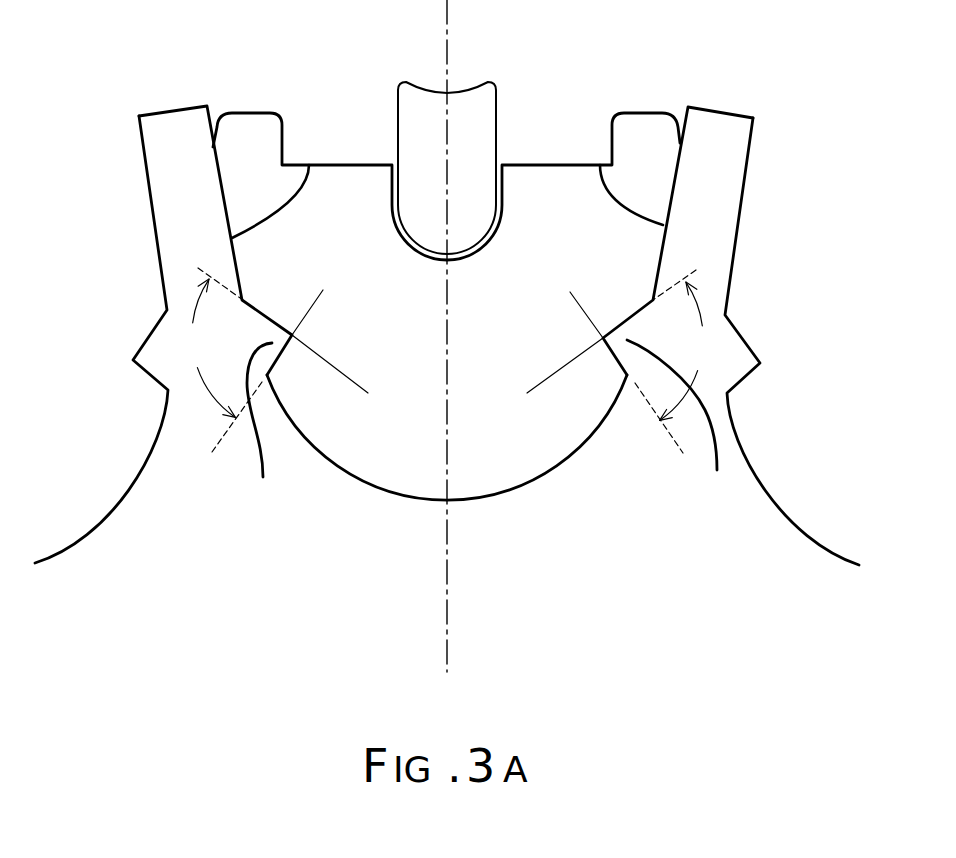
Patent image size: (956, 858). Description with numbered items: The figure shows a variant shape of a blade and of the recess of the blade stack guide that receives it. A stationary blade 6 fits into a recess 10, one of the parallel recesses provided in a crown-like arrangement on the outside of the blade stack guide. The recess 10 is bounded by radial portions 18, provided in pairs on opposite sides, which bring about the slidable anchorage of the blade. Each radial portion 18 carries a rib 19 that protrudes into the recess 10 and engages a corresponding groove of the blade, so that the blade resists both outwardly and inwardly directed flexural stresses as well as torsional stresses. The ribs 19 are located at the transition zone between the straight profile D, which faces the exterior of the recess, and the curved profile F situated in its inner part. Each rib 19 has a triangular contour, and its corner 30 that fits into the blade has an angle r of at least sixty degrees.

The stationary blade 6 is at (525, 202).
The recess 10 is at (490, 497).
The radial portion 18 is at (168, 108).
The rib 19 is at (263, 477).
The corner 30 is at (292, 335).
The straight profile D is at (309, 165).
The curved profile F is at (412, 497).
The angle r is at (446, 360).